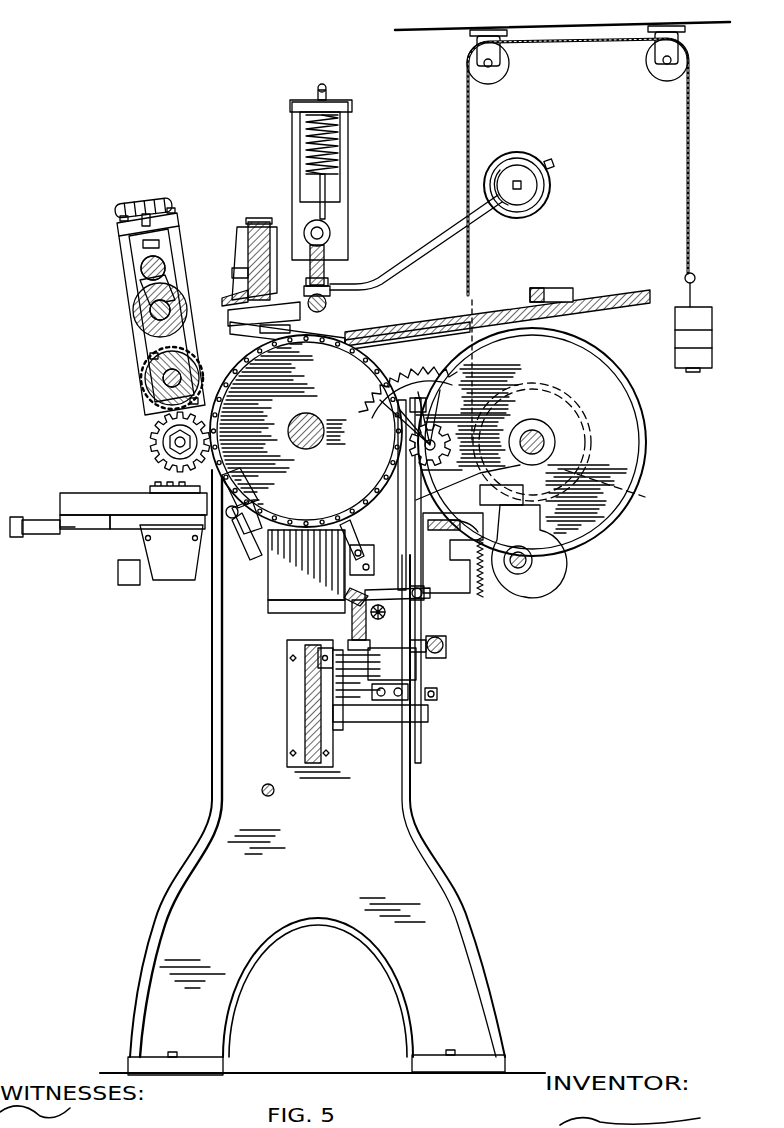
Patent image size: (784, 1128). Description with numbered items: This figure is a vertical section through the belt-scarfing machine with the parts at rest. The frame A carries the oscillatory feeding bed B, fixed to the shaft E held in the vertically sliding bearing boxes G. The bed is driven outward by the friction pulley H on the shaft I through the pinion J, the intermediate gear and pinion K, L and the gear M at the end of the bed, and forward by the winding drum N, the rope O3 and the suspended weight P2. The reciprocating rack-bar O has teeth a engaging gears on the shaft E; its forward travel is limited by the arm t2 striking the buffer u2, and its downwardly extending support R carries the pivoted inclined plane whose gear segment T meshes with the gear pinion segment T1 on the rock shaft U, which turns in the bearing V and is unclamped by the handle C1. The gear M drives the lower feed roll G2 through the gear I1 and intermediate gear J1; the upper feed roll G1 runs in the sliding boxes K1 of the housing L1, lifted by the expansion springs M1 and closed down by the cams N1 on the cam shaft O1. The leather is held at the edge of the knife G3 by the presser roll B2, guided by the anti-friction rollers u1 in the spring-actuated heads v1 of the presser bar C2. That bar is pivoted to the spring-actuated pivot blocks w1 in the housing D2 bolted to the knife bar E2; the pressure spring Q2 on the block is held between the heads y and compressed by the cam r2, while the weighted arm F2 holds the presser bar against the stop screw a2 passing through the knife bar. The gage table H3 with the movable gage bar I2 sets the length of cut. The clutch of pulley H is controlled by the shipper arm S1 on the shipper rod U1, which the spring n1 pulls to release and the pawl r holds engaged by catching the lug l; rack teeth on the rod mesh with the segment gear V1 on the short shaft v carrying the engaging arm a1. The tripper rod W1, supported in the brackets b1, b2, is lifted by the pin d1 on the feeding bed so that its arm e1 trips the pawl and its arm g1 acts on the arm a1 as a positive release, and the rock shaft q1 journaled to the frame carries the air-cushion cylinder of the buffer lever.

The frame A is at (430, 860).
The downwardly extending support R is at (168, 535).
The reciprocating rack-bar O is at (90, 508).
The inwardly extending arm t2 is at (36, 520).
The teeth a is at (150, 489).
The intermediate gear J1 is at (160, 440).
The housing L1 is at (132, 262).
The cam shaft O1 is at (115, 206).
The cam N1 is at (162, 262).
The expansion spring M1 is at (158, 342).
The sliding box K1 is at (145, 300).
The upper feed roll G1 is at (132, 310).
The lower feed roll G2 is at (146, 385).
The gear I1 is at (142, 378).
The pressure spring Q2 is at (340, 128).
The head y is at (306, 120).
The housing D2 is at (348, 190).
The spring actuated pivot block w1 is at (330, 228).
The presser bar C2 is at (326, 256).
The spring actuated head v1 is at (324, 290).
The cam r2 is at (325, 88).
The knife bar E2 is at (246, 250).
The stop screw a2 is at (232, 273).
The knife G3 is at (224, 302).
The anti-friction guide roller u1 is at (250, 322).
The weighted arm F2 is at (430, 244).
The rope O3 is at (470, 130).
The suspended weight P2 is at (695, 305).
The gage table H3 is at (630, 292).
The movable gage bar I2 is at (553, 288).
The oscillatory feeding bed B is at (400, 325).
The shaft E is at (318, 422).
The presser roll B2 is at (290, 392).
The gear M is at (268, 548).
The vertically sliding bearing box G is at (280, 600).
The buffer u2 is at (236, 500).
The lug or pin d1 is at (205, 565).
The shipper arm S1 is at (250, 560).
The spring actuated pawl r is at (350, 580).
The bracket b1 is at (372, 520).
The pawl l is at (346, 596).
The sliding shipper rod U1 is at (352, 615).
The spiral spring n1 is at (378, 620).
The segment gear V1 is at (344, 638).
The short shaft v is at (330, 655).
The engaging arm a1 is at (436, 665).
The bracket b2 is at (374, 717).
The arm g1 is at (437, 696).
The vertical tripper rod W1 is at (422, 752).
The pinion L is at (452, 446).
The handle C1 is at (418, 380).
The friction pulley H is at (646, 448).
The shaft I is at (556, 446).
The pinion J is at (542, 430).
The intermediate gear K is at (488, 402).
The winding drum N is at (642, 490).
The bearing V is at (590, 532).
The gear pinion segment T1 is at (530, 585).
The rock shaft U is at (528, 562).
The gear segment T is at (480, 590).
The engaging arm e1 is at (424, 598).
The rock shaft q1 is at (446, 648).